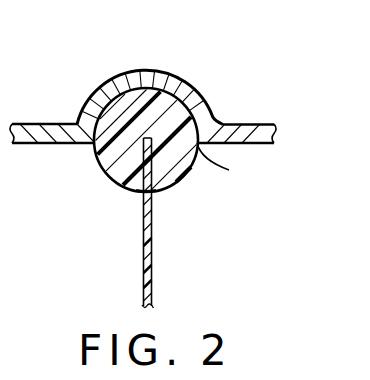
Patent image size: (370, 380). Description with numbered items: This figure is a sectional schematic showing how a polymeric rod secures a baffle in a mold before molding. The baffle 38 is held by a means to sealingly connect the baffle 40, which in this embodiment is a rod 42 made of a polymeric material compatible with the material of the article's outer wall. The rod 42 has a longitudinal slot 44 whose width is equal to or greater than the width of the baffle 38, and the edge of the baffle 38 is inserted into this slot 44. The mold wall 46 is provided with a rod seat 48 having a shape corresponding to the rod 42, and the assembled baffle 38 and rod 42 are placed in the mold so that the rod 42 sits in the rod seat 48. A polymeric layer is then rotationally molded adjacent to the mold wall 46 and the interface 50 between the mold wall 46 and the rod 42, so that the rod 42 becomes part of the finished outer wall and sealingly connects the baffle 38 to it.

The baffle 38 is at (146, 262).
The means to sealingly connect the baffle 40 is at (139, 146).
The rod 42 is at (110, 160).
The longitudinal slot 44 is at (161, 191).
The mold wall 46 is at (243, 132).
The rod seat 48 is at (184, 95).
The interface 50 is at (229, 170).